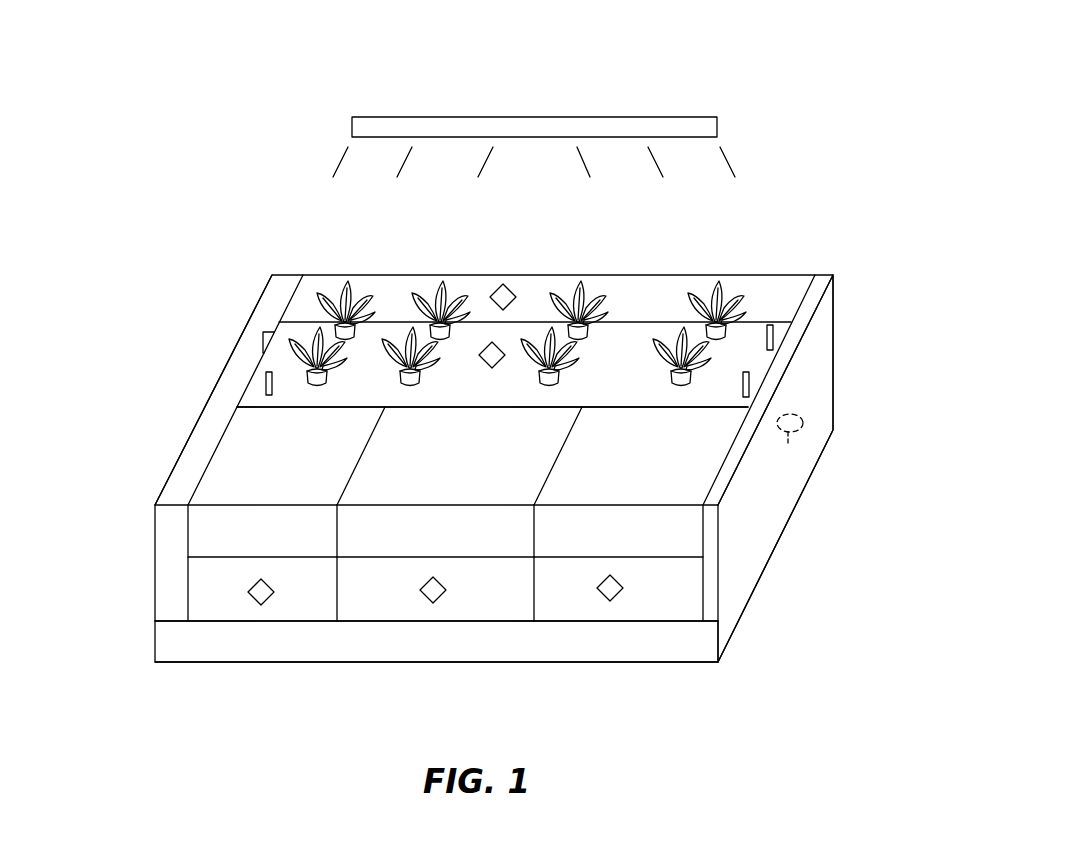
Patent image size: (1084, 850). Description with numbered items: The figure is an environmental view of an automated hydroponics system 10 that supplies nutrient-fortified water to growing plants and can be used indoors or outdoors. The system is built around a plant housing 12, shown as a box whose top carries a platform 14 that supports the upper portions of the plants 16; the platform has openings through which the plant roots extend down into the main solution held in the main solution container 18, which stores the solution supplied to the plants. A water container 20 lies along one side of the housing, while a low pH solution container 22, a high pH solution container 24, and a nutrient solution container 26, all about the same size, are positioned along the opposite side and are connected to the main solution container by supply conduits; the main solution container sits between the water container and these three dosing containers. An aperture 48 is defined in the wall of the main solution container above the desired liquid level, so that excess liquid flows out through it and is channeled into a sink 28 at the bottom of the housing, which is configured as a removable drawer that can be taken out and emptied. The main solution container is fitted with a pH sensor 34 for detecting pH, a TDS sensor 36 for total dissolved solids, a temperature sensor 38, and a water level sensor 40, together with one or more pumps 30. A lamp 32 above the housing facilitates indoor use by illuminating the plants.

The automated hydroponics system 10 is at (870, 57).
The plant housing 12 is at (755, 512).
The platform 14 is at (733, 365).
The plants 16 is at (338, 293).
The main solution container 18 is at (283, 367).
The water container 20 is at (760, 287).
The low pH solution container 22 is at (286, 514).
The high pH solution container 24 is at (459, 514).
The nutrient solution container 26 is at (618, 499).
The sink 28 is at (398, 648).
The pumps 30 is at (502, 285).
The lamp 32 is at (455, 117).
The pH sensor 34 is at (263, 385).
The TDS sensor 36 is at (750, 378).
The temperature sensor 38 is at (769, 323).
The water level sensor 40 is at (263, 330).
The aperture 48 is at (790, 448).